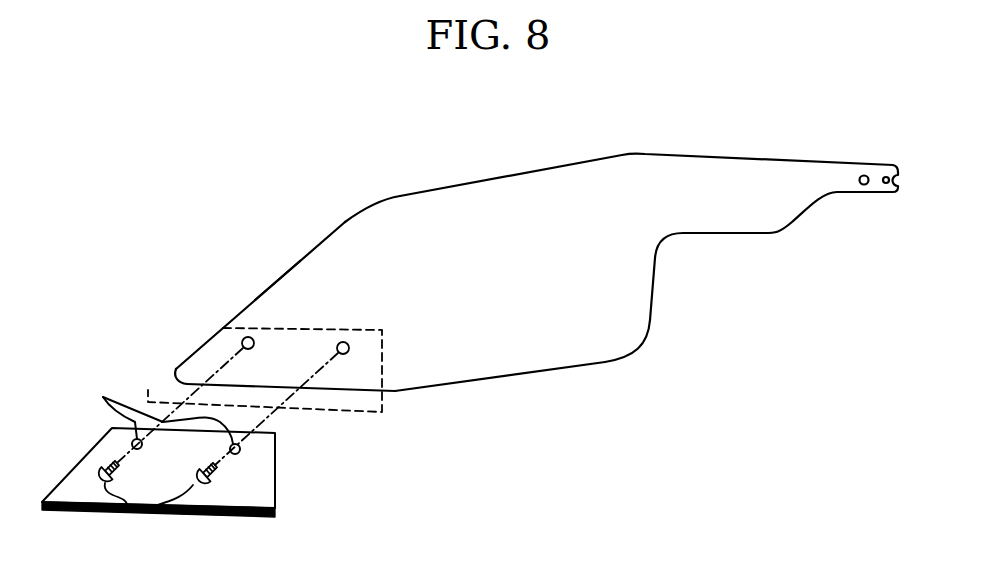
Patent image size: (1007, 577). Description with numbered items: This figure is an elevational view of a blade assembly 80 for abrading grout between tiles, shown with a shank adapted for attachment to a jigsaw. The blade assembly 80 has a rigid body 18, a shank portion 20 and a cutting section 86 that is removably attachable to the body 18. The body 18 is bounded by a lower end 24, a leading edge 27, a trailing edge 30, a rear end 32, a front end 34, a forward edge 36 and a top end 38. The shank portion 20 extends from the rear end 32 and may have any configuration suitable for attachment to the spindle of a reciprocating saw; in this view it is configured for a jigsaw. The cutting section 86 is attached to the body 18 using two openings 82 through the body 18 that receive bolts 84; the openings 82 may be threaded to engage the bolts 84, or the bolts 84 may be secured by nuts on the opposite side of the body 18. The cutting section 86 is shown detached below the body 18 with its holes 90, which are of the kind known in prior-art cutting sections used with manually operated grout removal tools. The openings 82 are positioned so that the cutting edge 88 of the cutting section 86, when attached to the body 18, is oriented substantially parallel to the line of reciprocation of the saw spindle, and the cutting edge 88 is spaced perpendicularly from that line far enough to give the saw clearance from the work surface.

The rigid body 18 is at (386, 211).
The shank portion 20 is at (768, 212).
The lower end 24 is at (563, 368).
The leading edge 27 is at (166, 378).
The trailing edge 30 is at (400, 396).
The rear end 32 is at (646, 338).
The front end 34 is at (236, 276).
The forward edge 36 is at (317, 240).
The top end 38 is at (477, 179).
The blade assembly 80 is at (506, 288).
The openings 82 is at (250, 370).
The bolts 84 is at (130, 512).
The cutting section 86 is at (262, 473).
The cutting edge 88 is at (220, 512).
The holes 90 is at (150, 407).